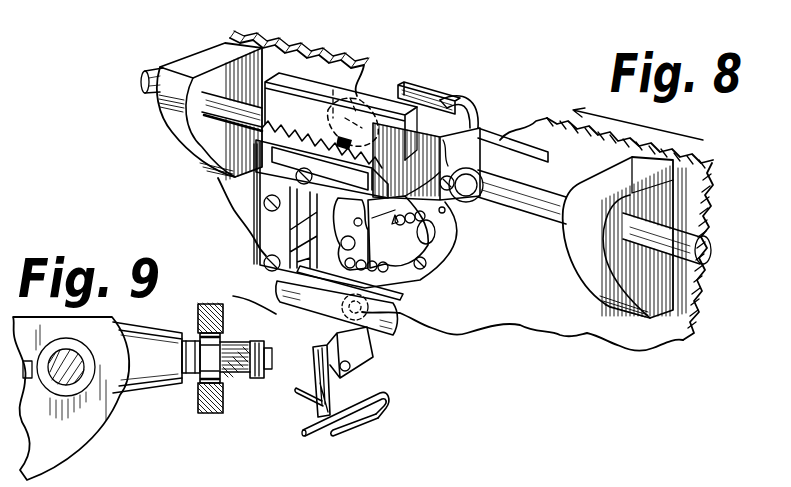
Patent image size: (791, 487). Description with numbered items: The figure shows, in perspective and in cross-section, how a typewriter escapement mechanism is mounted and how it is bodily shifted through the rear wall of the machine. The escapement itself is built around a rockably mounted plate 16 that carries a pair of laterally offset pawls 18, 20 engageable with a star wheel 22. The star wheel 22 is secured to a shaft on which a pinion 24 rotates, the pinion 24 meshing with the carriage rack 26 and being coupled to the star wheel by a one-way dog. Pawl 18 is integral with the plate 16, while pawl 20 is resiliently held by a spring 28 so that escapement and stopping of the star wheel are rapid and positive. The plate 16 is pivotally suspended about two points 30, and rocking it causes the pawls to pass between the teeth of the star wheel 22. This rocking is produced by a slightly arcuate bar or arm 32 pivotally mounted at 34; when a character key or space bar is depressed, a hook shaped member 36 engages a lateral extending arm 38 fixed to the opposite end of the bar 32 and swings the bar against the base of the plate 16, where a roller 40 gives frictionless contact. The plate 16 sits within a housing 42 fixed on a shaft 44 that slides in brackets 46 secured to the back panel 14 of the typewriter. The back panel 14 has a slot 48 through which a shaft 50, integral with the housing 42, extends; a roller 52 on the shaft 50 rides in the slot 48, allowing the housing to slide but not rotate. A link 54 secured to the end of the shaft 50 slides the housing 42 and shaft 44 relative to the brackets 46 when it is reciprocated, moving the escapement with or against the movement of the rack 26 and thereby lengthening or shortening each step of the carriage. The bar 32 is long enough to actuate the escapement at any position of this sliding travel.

In FIG. 8, the back panel 14 is at (465, 191).
In FIG. 8, the rockably mounted plate 16 is at (404, 220).
In FIG. 8, the pawl 18 is at (428, 162).
In FIG. 8, the pawl 20 is at (342, 228).
In FIG. 8, the star wheel 22 is at (349, 107).
In FIG. 8, the pinion 24 is at (315, 150).
In FIG. 8, the carriage rack 26 is at (341, 116).
In FIG. 8, the spring 28 is at (375, 273).
In FIG. 8, the points 30 is at (298, 225).
In FIG. 8, the arcuate bar or arm 32 is at (398, 325).
In FIG. 8, the pivot 34 is at (352, 366).
In FIG. 8, the hook shaped member 36 is at (350, 433).
In FIG. 8, the lateral extending arm 38 is at (381, 411).
In FIG. 8, the roller 40 is at (318, 304).
In FIG. 8, the housing 42 is at (266, 246).
In FIG. 9, the housing 42 is at (70, 450).
In FIG. 8, the shaft 44 is at (596, 178).
In FIG. 8, the brackets 46 is at (185, 135).
In FIG. 8, the slot 48 is at (546, 124).
In FIG. 9, the slot 48 is at (200, 382).
In FIG. 9, the shaft 50 is at (235, 351).
In FIG. 8, the roller 52 is at (462, 106).
In FIG. 9, the roller 52 is at (199, 336).
In FIG. 8, the link 54 is at (438, 74).
In FIG. 9, the link 54 is at (259, 379).